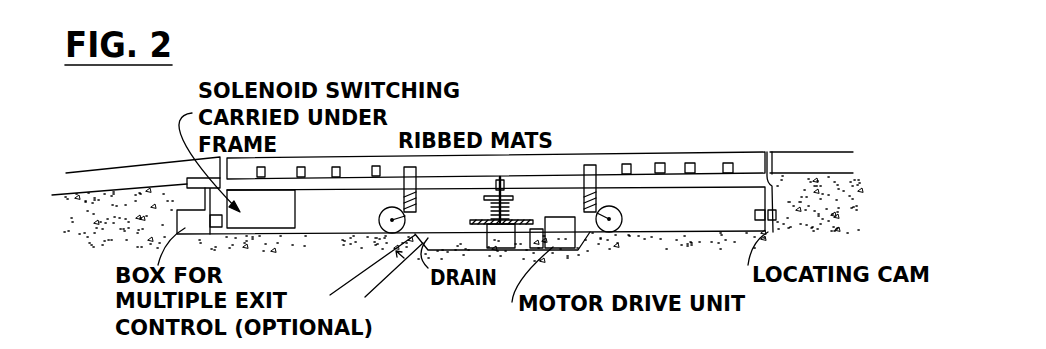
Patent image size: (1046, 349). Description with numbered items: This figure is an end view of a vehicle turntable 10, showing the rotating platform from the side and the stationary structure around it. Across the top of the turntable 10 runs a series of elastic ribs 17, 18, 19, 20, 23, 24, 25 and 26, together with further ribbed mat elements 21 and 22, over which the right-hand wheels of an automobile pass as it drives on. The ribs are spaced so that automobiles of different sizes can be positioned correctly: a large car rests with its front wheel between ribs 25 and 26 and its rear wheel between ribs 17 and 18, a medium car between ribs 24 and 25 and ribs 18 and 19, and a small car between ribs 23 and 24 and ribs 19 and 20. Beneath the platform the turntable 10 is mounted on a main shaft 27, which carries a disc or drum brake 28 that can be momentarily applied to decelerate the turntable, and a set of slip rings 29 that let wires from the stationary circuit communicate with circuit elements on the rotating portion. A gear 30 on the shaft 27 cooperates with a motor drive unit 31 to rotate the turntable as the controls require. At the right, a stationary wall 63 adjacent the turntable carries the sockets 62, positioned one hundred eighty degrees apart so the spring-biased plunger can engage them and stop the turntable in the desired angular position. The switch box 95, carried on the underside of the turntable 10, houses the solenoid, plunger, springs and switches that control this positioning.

The turntable 10 is at (645, 183).
The elastic rib 17 is at (258, 171).
The elastic rib 18 is at (298, 171).
The elastic rib 19 is at (333, 171).
The elastic rib 20 is at (373, 170).
The roller 21 is at (411, 168).
The ribbed mat section 22 is at (585, 166).
The elastic rib 23 is at (627, 168).
The elastic rib 24 is at (660, 163).
The elastic rib 25 is at (712, 134).
The elastic rib 26 is at (725, 165).
The main shaft 27 is at (500, 178).
The disc or drum brake 28 is at (513, 198).
The slip rings 29 is at (478, 213).
The gear 30 is at (478, 226).
The motor drive unit 31 is at (563, 248).
The socket 62 is at (216, 228).
The stationary wall 63 is at (770, 152).
The switch box 95 is at (287, 221).